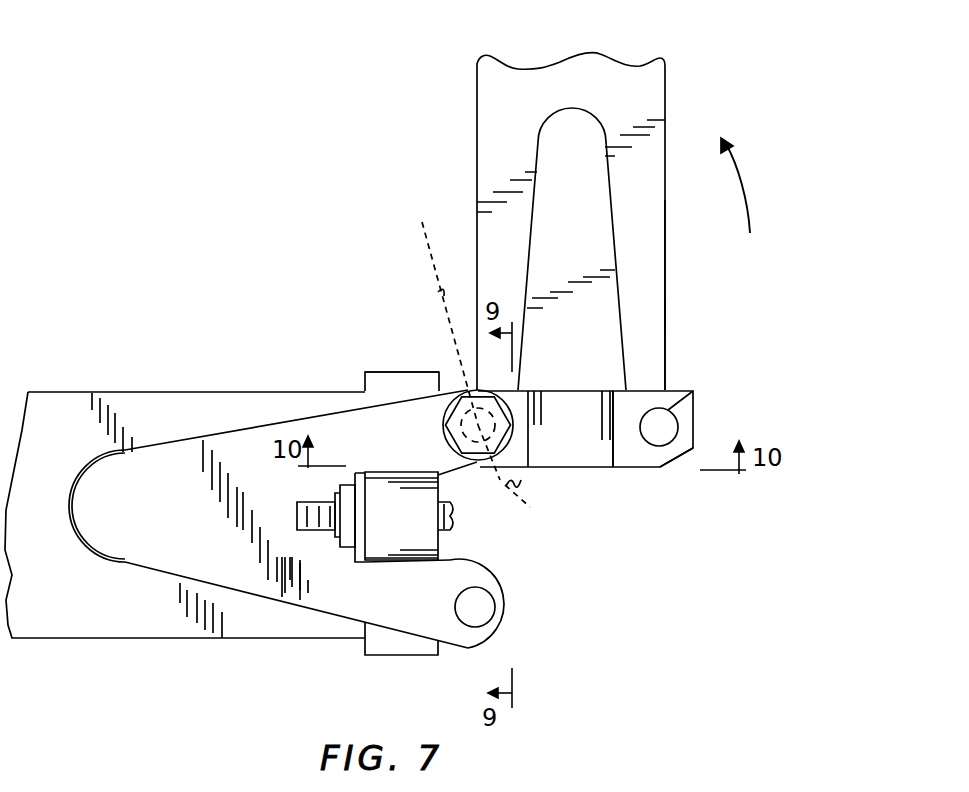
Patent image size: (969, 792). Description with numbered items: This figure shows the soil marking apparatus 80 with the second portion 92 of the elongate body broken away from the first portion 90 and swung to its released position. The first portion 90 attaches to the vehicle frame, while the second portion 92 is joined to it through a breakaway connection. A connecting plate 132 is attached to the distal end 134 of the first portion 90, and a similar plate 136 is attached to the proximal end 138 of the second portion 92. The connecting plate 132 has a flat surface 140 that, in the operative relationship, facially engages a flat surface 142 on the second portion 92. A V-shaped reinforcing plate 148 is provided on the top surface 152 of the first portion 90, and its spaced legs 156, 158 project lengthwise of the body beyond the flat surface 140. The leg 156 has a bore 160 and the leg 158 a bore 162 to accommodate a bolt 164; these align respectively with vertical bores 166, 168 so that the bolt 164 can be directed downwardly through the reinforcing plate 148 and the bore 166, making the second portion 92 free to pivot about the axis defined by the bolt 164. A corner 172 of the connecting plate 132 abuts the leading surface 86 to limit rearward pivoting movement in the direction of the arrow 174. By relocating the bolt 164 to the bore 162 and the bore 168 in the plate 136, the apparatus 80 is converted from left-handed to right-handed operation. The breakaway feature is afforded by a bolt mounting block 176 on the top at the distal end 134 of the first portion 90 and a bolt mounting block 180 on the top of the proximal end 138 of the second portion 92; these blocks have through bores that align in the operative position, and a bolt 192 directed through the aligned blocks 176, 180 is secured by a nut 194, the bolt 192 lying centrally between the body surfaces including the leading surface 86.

The apparatus for marking soil 80 is at (679, 320).
The leading surface 86 is at (477, 120).
The first portion 90 is at (130, 392).
The second portion 92 is at (665, 106).
The connecting plate 132 is at (383, 372).
The distal end 134 is at (304, 391).
The plate 136 is at (693, 412).
The proximal end 138 is at (665, 353).
The flat surface 140 is at (440, 558).
The flat surface 142 is at (650, 467).
The V-shaped reinforcing plate 148 is at (155, 529).
The top surface 152 is at (52, 410).
The leg 156 is at (450, 390).
The leg 158 is at (512, 618).
The bore 160 is at (507, 466).
The bore 162 is at (470, 615).
The bolt 164 is at (528, 464).
The vertical bore 166 is at (435, 311).
The vertical bore 168 is at (693, 391).
The corner 172 is at (435, 372).
The arrow 174 is at (742, 186).
The bolt mounting block 176 is at (392, 535).
The bolt mounting block 180 is at (588, 440).
The bolt 192 is at (452, 532).
The nut 194 is at (337, 532).